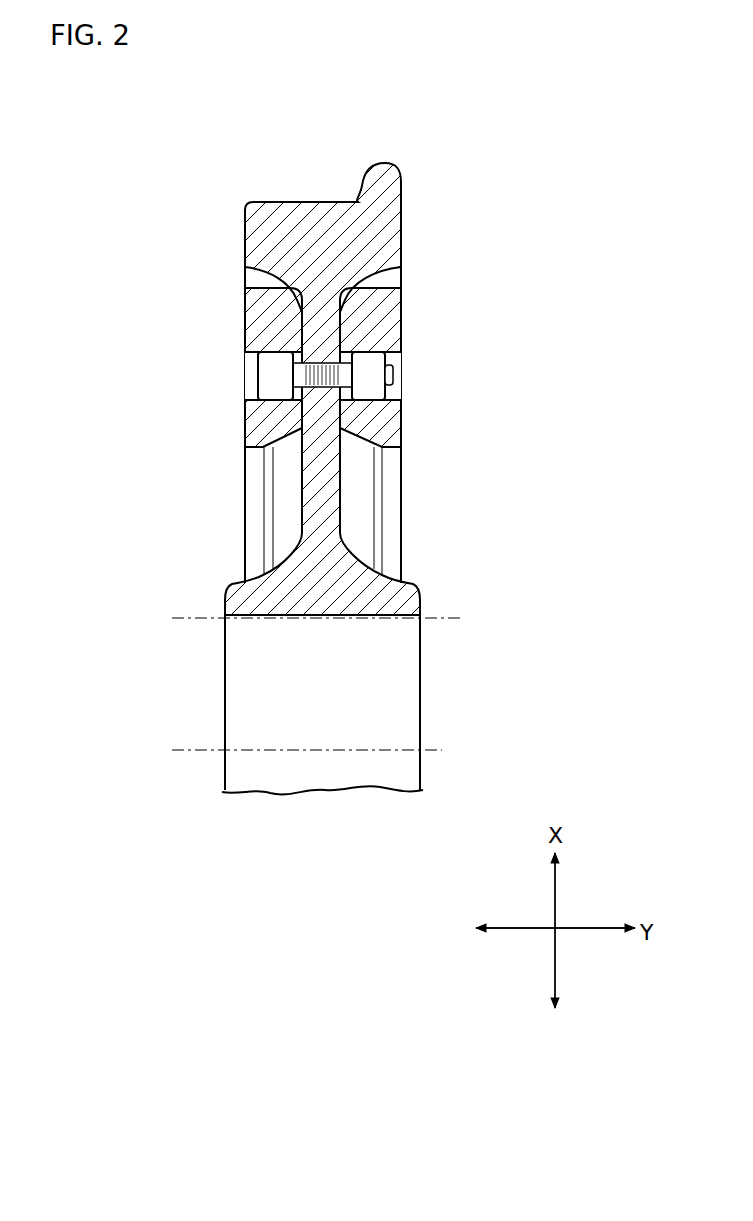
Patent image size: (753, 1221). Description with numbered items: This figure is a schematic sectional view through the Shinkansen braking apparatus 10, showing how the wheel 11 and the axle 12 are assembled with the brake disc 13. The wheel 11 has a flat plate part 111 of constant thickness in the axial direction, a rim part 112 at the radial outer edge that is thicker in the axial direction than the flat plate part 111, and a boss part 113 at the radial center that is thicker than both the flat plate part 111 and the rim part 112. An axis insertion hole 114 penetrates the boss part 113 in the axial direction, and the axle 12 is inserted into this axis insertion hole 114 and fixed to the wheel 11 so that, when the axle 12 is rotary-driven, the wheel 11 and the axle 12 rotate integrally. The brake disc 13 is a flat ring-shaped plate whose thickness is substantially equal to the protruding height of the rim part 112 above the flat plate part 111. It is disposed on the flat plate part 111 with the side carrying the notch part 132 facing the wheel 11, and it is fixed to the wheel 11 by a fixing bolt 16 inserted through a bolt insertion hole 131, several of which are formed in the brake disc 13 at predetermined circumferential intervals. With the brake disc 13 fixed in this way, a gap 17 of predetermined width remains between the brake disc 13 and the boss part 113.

The Shinkansen braking apparatus 10 is at (241, 172).
The wheel 11 is at (405, 203).
The axle 12 is at (437, 617).
The brake disc 13 is at (255, 281).
The fixing bolt 16 is at (250, 384).
The gap 17 is at (260, 515).
The flat plate part 111 is at (342, 470).
The rim part 112 is at (245, 215).
The boss part 113 is at (226, 603).
The axis insertion hole 114 is at (376, 618).
The bolt insertion hole 131 is at (247, 372).
The notch part 132 is at (348, 330).